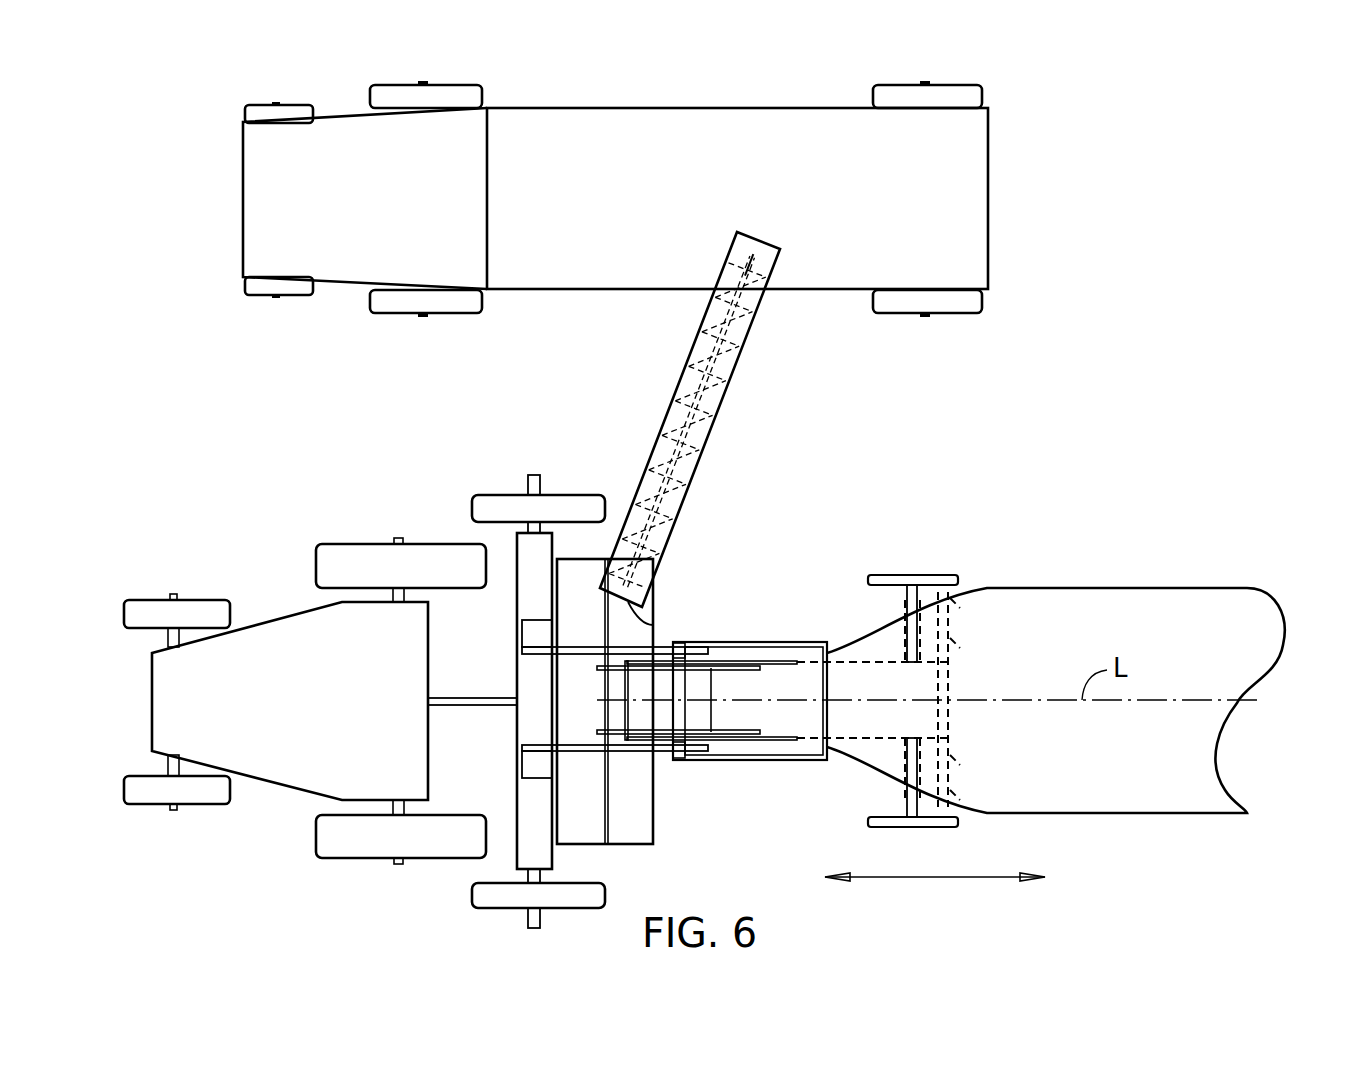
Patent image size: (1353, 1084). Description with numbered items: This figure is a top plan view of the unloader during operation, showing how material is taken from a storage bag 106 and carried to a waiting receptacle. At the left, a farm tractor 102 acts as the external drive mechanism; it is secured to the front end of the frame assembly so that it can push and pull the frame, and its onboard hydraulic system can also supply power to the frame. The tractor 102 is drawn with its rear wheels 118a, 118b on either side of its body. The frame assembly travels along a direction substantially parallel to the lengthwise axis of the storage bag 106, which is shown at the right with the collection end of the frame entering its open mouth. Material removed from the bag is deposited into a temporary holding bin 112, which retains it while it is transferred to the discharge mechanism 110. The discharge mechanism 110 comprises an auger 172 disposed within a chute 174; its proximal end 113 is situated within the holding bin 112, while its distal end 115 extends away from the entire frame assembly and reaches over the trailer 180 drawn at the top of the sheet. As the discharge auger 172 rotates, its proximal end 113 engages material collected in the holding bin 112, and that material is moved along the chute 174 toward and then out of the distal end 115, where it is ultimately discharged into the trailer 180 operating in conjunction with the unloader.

The trailer 180 is at (967, 163).
The distal end 115 is at (780, 217).
The auger 172 is at (690, 390).
The discharge mechanism 110 is at (719, 396).
The chute 174 is at (700, 465).
The proximal end 113 is at (653, 624).
The tractor 102 is at (320, 697).
The drive wheel 118b is at (363, 551).
The drive wheel 118a is at (354, 850).
The holding bin 112 is at (640, 827).
The storage bag 106 is at (1177, 808).